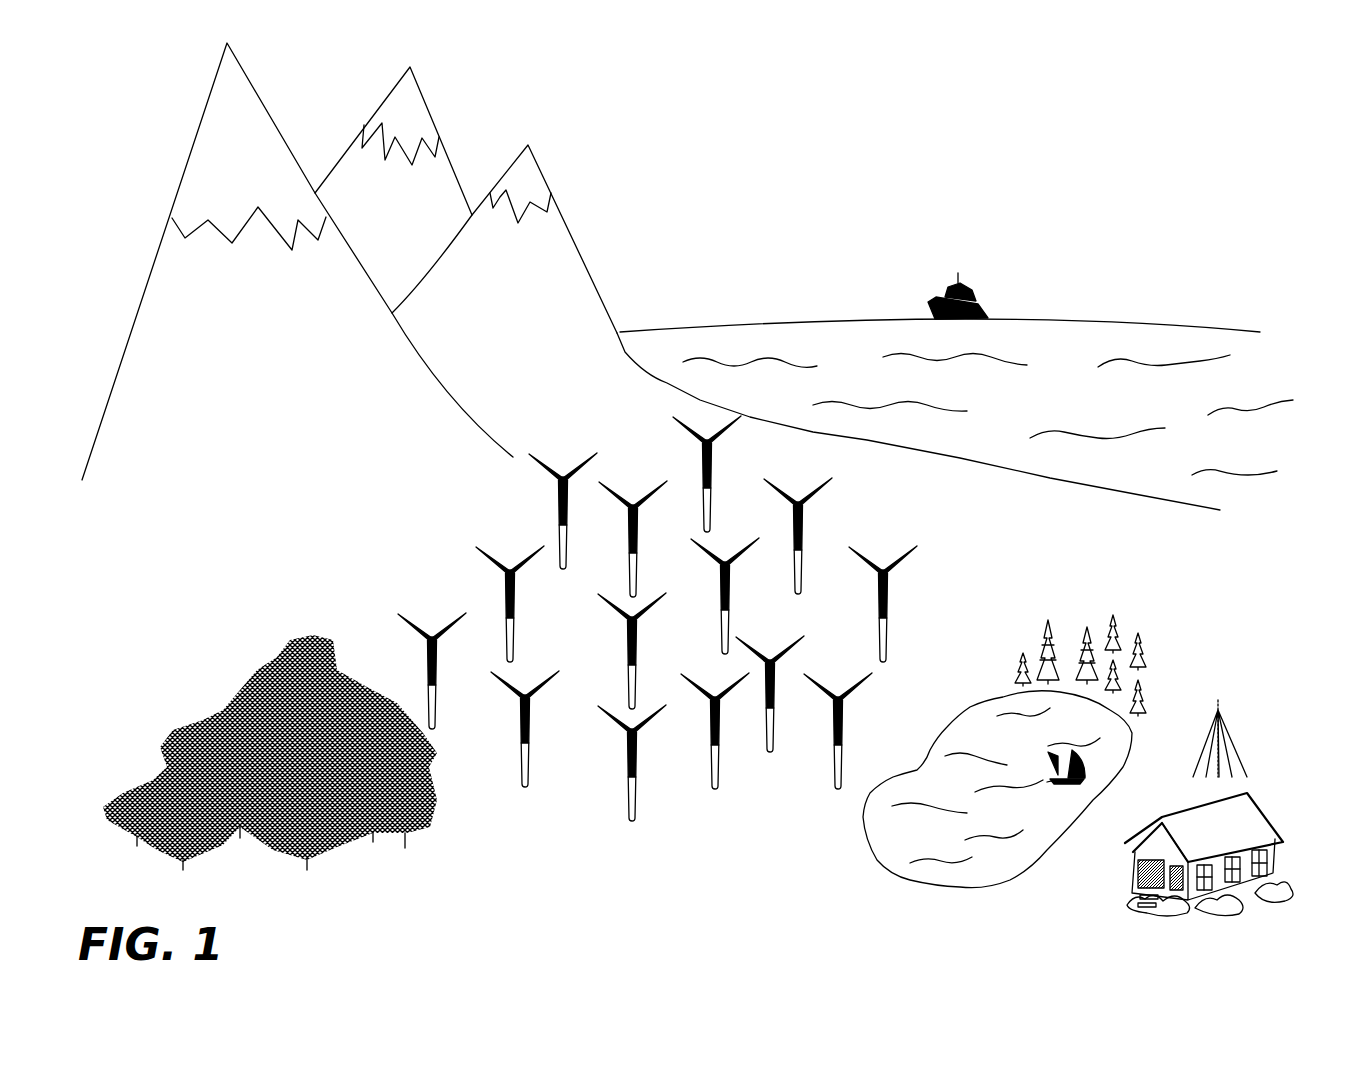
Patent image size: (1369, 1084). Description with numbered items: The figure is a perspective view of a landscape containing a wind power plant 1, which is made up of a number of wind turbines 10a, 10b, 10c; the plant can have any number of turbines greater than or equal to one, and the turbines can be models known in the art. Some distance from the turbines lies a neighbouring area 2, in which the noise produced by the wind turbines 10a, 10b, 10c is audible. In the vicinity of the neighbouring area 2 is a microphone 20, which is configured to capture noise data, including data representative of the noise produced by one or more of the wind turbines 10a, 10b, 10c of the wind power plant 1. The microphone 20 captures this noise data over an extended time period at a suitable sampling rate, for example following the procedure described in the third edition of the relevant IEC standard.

The wind power plant 1 is at (446, 550).
The wind turbine 10a is at (700, 463).
The wind turbine 10b is at (903, 547).
The wind turbine 10c is at (613, 700).
The microphone 20 is at (1217, 710).
The neighbouring area 2 is at (1222, 820).